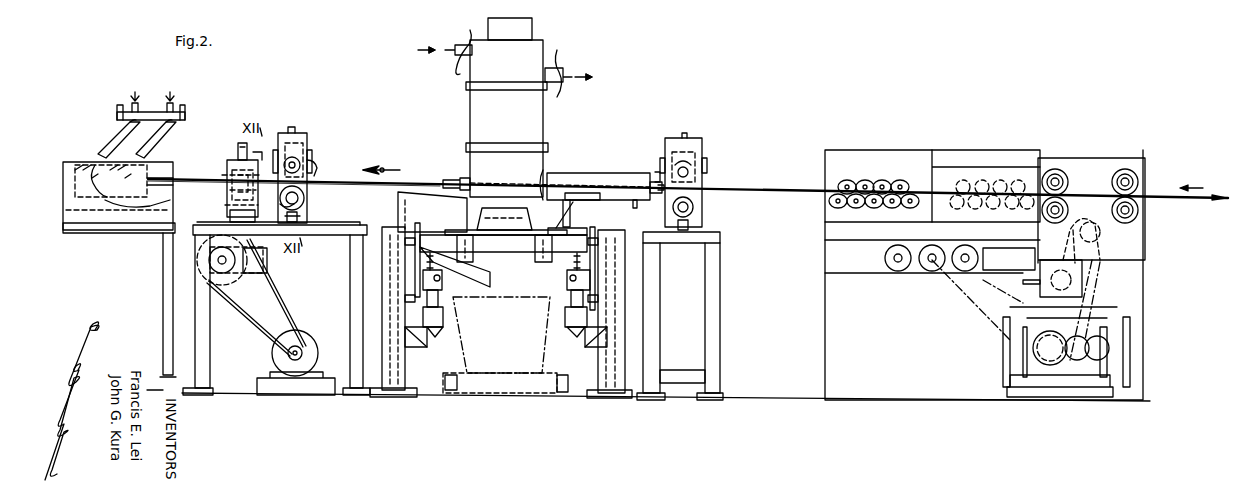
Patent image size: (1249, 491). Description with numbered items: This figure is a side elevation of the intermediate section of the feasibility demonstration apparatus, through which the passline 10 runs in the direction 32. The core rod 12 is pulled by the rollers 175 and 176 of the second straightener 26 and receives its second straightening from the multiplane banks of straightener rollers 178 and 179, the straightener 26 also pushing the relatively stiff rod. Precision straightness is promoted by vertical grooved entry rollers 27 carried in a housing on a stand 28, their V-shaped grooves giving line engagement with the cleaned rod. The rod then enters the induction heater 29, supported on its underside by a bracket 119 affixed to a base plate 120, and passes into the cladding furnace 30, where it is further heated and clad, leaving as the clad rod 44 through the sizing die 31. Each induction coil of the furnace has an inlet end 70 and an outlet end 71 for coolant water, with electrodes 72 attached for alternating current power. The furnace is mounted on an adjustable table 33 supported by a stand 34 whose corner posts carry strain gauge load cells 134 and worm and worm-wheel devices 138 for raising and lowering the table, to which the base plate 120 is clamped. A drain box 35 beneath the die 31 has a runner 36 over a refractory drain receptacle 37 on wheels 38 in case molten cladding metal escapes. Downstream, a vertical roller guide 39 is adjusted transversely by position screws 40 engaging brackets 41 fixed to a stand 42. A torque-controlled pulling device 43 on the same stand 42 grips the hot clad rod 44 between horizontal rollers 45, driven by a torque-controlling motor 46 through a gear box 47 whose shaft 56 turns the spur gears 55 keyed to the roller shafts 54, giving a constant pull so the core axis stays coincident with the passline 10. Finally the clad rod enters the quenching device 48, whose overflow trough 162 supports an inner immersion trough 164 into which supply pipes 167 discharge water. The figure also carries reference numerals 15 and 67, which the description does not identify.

The passline 10 is at (748, 192).
The core rod 12 is at (788, 190).
The direction of travel 15 is at (1216, 178).
The second straightener 26 is at (832, 320).
The vertical grooved entry rollers 27 is at (707, 173).
The stand 28 is at (713, 267).
The induction heater 29 is at (583, 173).
The cladding furnace 30 is at (478, 117).
The sizing die 31 is at (457, 180).
The direction 32 is at (386, 172).
The adjustable table 33 is at (503, 250).
The stand 34 is at (397, 377).
The drain box 35 is at (407, 203).
The runner 36 is at (490, 277).
The refractory drain receptacle 37 is at (467, 333).
The wheels 38 is at (447, 390).
The vertical roller guide 39 is at (302, 136).
The transverse position screws 40 is at (302, 217).
The bracket 41 is at (310, 201).
The stand 42 is at (320, 234).
The torque-controlled pulling device 43 is at (227, 165).
The clad rod 44 is at (368, 170).
The horizontal rollers 45 is at (230, 178).
The torque-controlling motor 46 is at (300, 336).
The gear box 47 is at (265, 257).
The quenching device 48 is at (90, 166).
The shafts 54 is at (236, 204).
The spur gears 55 is at (250, 216).
The shaft 56 is at (250, 275).
The idler roller 67 is at (307, 172).
The inlet end 70 is at (453, 47).
The outlet end 71 is at (566, 75).
The electrodes 72 is at (470, 34).
The bracket 119 is at (585, 192).
The base plate 120 is at (457, 230).
The strain gauge load cell 134 is at (439, 336).
The worm and worm-wheel device 138 is at (442, 275).
The overflow trough 162 is at (119, 215).
The inner immersion trough 164 is at (101, 183).
The supply pipes 167 is at (164, 104).
The rollers 175 is at (1126, 169).
The rollers 176 is at (1073, 147).
The straightener rollers 178 is at (990, 180).
The straightener rollers 179 is at (882, 180).